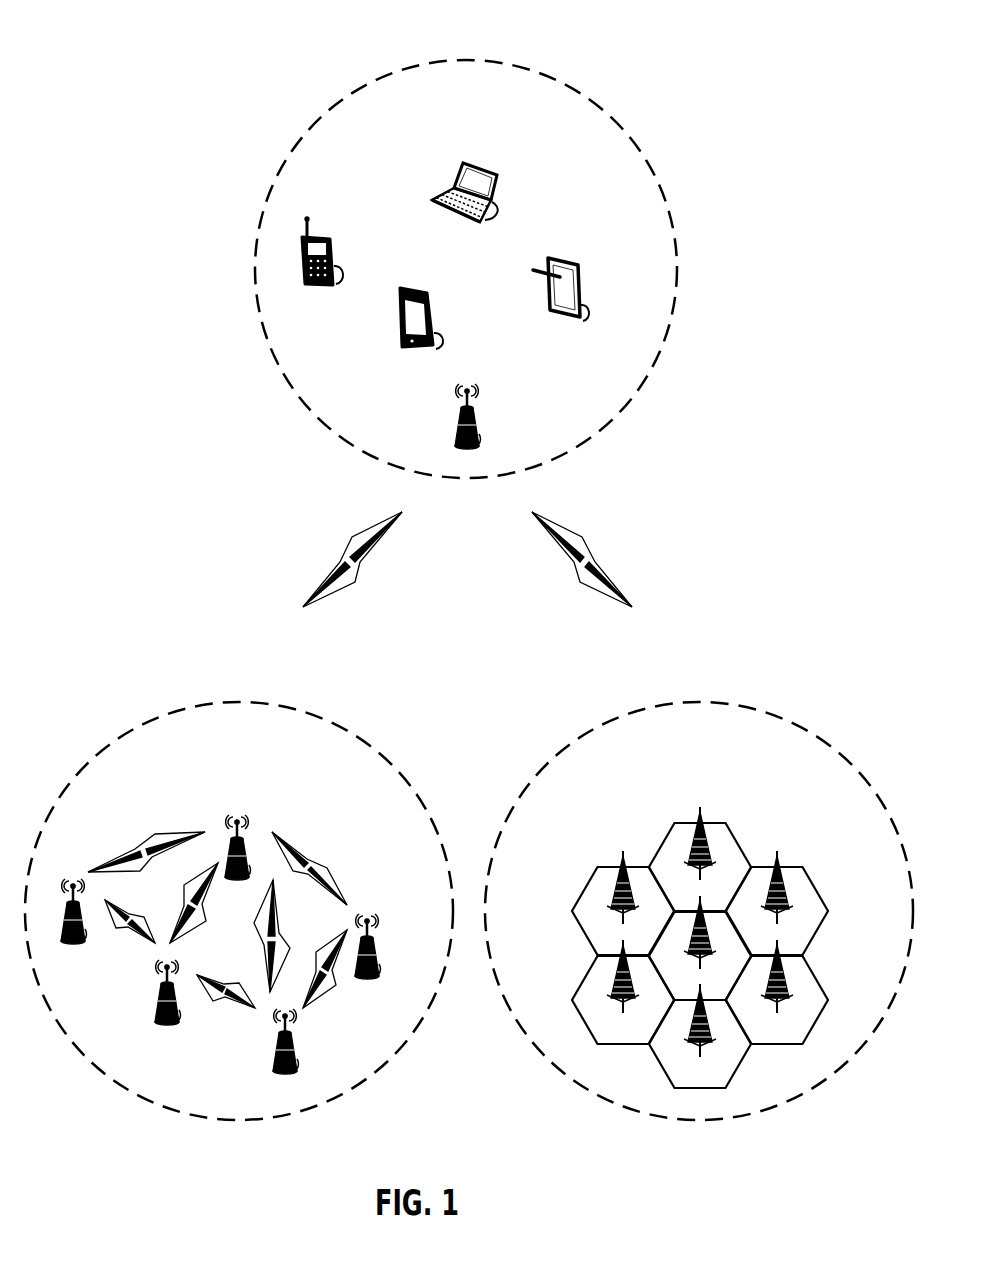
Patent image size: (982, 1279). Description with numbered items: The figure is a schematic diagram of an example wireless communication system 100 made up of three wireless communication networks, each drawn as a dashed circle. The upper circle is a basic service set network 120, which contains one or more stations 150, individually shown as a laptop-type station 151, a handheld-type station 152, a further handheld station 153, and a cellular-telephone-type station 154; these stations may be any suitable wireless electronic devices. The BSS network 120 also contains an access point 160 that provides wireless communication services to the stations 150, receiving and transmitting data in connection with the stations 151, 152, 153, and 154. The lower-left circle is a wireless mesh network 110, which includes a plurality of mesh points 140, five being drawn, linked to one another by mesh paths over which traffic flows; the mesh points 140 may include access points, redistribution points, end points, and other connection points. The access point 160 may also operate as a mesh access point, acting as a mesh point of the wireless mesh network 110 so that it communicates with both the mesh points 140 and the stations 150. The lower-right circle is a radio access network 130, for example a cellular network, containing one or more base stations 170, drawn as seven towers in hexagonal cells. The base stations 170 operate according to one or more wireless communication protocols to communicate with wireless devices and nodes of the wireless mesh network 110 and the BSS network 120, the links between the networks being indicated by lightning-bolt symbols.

The wireless communication system 100 is at (84, 37).
The wireless mesh network 110 is at (238, 703).
The basic service set network 120 is at (467, 60).
The radio access network 130 is at (698, 703).
The mesh points 140 is at (220, 907).
The stations 150 is at (467, 222).
The station 151 is at (487, 168).
The station 152 is at (583, 266).
The station 153 is at (440, 296).
The station 154 is at (351, 237).
The access point 160 is at (503, 416).
The base stations 170 is at (700, 914).